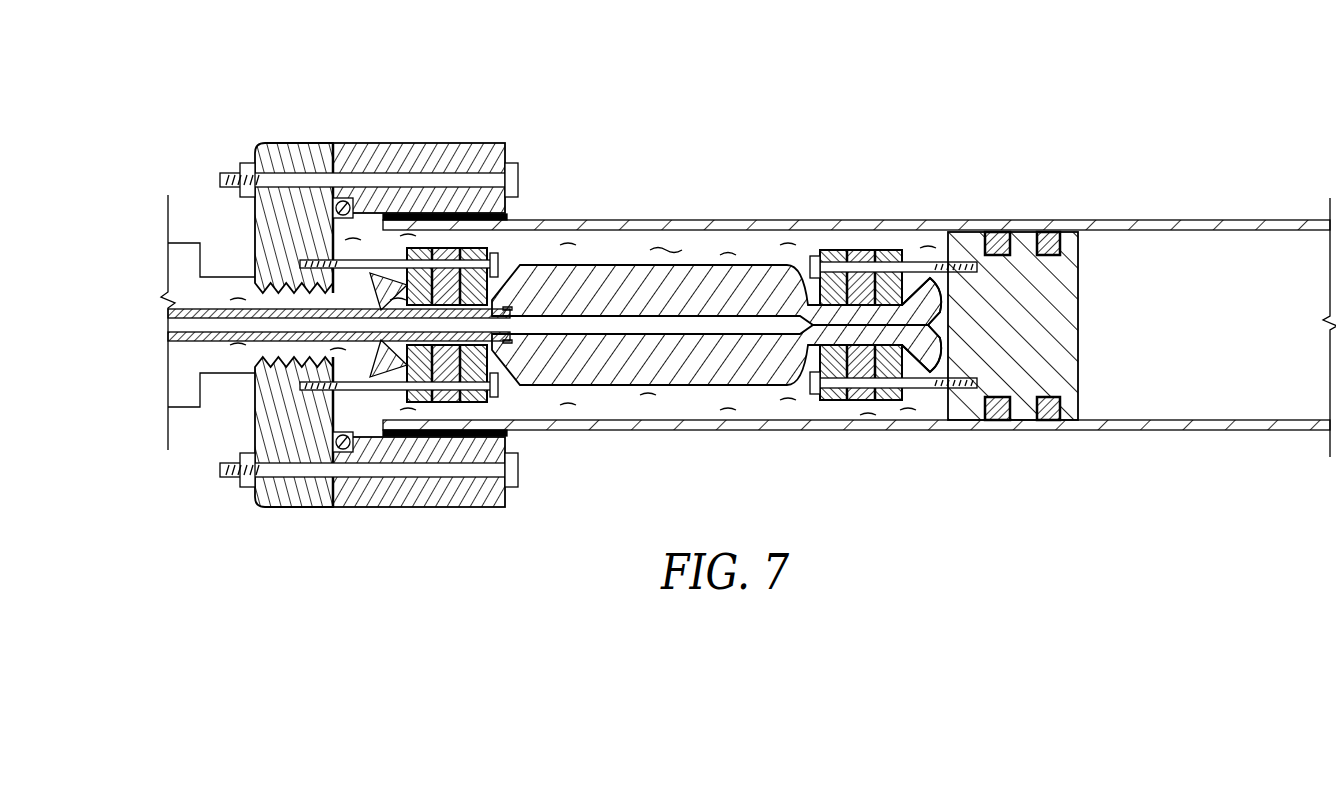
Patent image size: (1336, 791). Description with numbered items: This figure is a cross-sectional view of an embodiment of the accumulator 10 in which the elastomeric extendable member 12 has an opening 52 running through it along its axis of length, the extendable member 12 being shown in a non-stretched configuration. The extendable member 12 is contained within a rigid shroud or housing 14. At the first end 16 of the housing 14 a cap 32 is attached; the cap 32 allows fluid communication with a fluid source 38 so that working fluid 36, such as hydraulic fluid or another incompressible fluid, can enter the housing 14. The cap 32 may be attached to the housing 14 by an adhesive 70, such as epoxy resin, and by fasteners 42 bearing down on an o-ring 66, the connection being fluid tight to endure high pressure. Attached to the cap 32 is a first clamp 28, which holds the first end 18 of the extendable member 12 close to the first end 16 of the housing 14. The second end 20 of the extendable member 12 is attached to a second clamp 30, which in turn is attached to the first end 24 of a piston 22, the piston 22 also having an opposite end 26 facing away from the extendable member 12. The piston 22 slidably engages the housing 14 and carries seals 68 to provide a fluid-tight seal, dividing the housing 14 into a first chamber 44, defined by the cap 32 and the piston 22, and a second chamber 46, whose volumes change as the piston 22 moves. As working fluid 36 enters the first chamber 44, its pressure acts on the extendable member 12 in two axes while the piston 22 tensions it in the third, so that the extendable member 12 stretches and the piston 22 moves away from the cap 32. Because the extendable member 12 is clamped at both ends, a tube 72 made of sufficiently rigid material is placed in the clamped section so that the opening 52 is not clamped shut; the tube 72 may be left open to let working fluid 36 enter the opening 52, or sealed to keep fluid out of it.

The accumulator 10 is at (1182, 90).
The extendable member 12 is at (640, 382).
The housing 14 is at (688, 222).
The first end of the housing 16 is at (372, 214).
The first end of the extendable member 18 is at (372, 432).
The second end of the extendable member 20 is at (920, 360).
The piston 22 is at (1080, 385).
The first end of the piston 24 is at (915, 264).
The tube section 26 is at (1080, 248).
The first clamp 28 is at (490, 248).
The second clamp 30 is at (862, 250).
The cap 32 is at (352, 148).
The working fluid 36 is at (530, 400).
The fluid source 38 is at (184, 258).
The fasteners 42 is at (445, 178).
The first chamber 44 is at (712, 237).
The second chamber 46 is at (1203, 405).
The opening 52 is at (562, 318).
The o-ring 66 is at (340, 205).
The seals 68 is at (1043, 233).
The adhesive 70 is at (470, 215).
The tube 72 is at (197, 334).